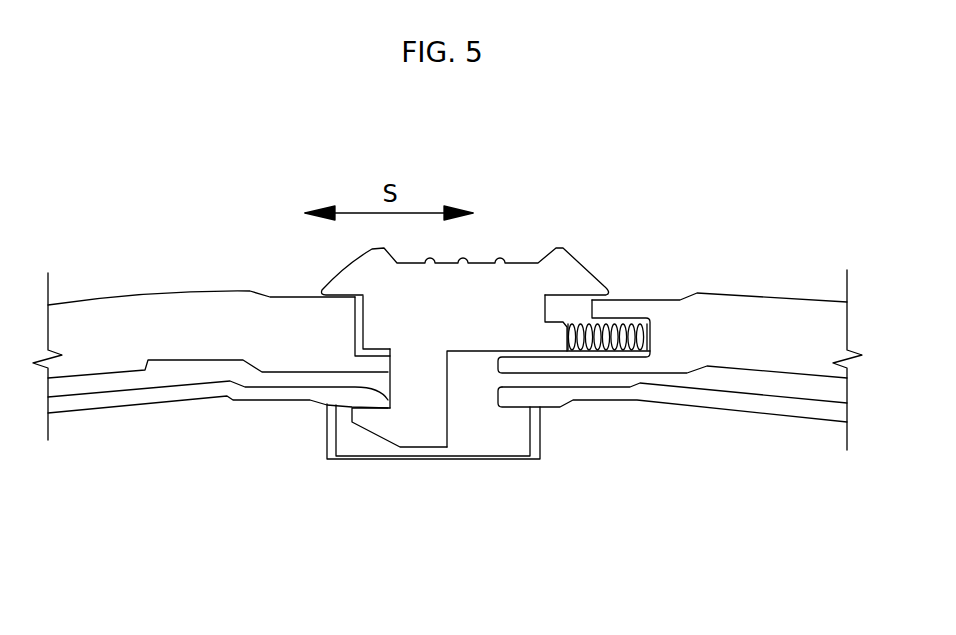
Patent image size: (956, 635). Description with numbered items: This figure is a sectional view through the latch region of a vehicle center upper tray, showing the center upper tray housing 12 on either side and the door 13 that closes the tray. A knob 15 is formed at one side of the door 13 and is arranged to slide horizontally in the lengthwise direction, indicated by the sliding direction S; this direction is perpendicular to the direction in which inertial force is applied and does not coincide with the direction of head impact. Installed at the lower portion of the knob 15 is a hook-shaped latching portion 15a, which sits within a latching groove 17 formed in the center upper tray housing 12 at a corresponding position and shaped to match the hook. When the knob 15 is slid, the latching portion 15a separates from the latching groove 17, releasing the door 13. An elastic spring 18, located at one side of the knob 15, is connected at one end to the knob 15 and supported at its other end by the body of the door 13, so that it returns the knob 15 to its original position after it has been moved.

The center upper tray housing 12 is at (108, 398).
The door 13 is at (757, 323).
The knob 15 is at (462, 302).
The latching portion 15a is at (380, 425).
The latching groove 17 is at (347, 397).
The elastic spring 18 is at (617, 327).